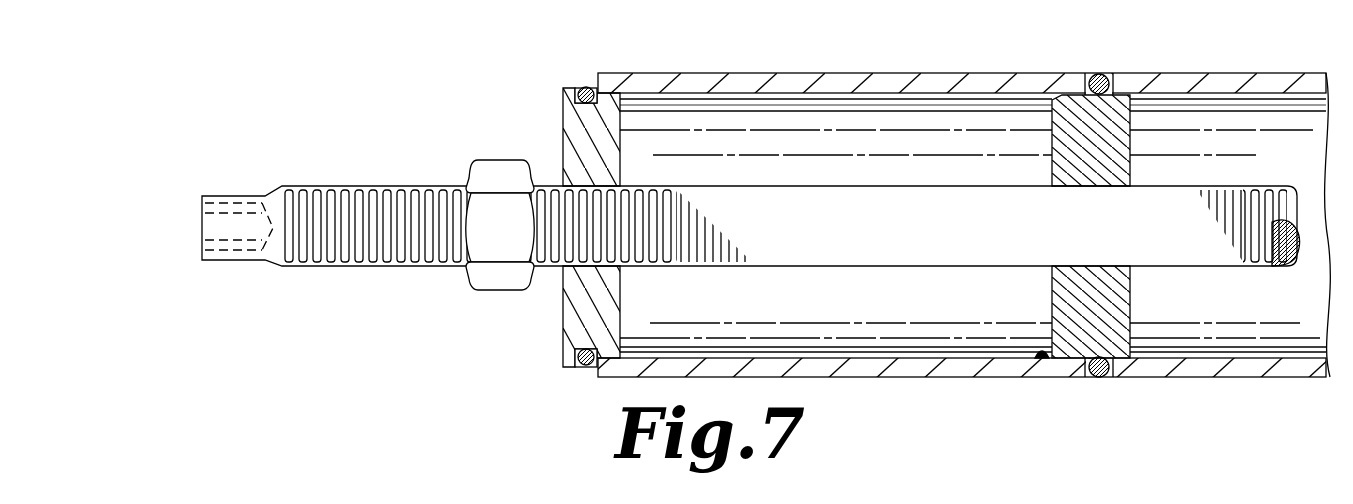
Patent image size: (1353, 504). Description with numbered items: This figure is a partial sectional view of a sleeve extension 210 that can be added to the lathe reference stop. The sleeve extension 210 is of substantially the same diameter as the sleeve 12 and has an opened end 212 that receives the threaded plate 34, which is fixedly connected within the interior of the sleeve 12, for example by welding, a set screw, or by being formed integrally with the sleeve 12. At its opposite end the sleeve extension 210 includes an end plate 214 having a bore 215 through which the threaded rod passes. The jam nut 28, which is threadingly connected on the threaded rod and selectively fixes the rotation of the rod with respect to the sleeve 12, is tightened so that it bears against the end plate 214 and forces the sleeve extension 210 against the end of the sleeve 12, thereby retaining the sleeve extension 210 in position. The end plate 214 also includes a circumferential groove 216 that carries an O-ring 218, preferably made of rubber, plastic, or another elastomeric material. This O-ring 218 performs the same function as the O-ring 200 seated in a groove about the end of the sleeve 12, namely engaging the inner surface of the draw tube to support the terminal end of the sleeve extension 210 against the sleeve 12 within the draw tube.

The sleeve 12 is at (1215, 377).
The jam nut 28 is at (497, 282).
The threaded plate 34 is at (1113, 358).
The O-ring 200 is at (1100, 360).
The sleeve extension 210 is at (545, 110).
The opened end 212 is at (1037, 357).
The end plate 214 is at (583, 318).
The bore 215 is at (606, 186).
The circumferential groove 216 is at (568, 88).
The O-ring 218 is at (588, 86).